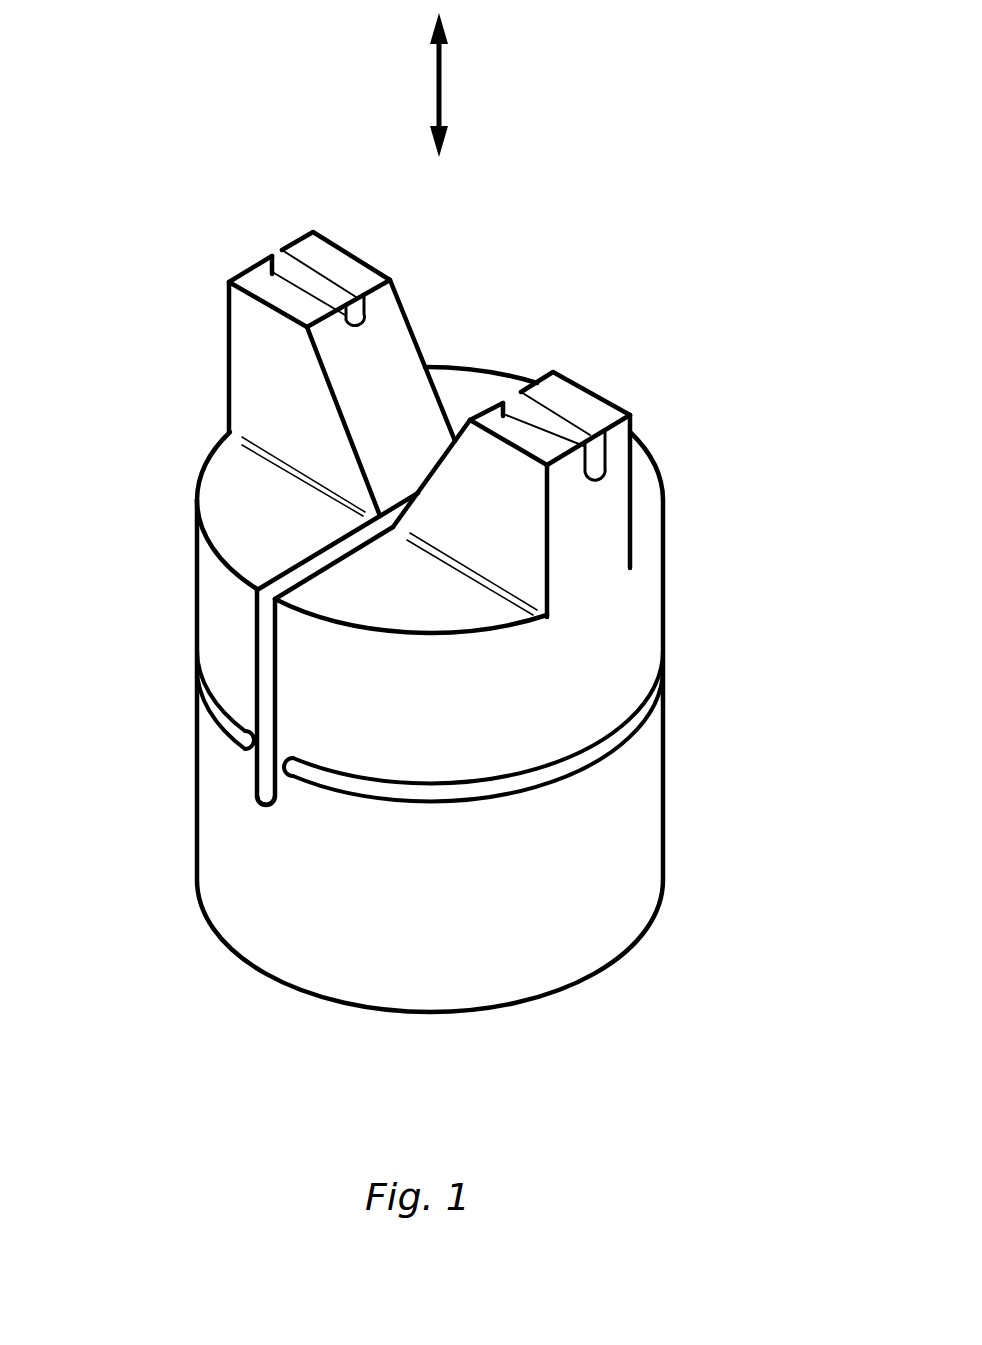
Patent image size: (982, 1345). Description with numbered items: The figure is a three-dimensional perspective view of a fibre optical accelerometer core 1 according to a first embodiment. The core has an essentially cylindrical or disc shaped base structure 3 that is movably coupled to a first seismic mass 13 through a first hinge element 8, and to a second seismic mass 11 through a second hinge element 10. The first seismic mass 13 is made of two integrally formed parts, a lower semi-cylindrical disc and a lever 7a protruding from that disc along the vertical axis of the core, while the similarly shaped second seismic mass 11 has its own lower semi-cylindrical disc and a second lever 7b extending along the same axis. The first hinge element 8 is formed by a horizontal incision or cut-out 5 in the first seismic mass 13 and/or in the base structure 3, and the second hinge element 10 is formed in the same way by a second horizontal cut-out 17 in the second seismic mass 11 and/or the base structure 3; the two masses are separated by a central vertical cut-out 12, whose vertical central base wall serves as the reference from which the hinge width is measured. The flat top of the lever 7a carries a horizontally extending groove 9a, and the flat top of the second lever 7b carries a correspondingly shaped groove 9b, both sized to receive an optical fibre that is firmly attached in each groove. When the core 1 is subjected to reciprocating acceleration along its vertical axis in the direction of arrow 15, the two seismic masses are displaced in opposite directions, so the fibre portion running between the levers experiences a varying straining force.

The fibre optical accelerometer core 1 is at (480, 994).
The base structure 3 is at (724, 790).
The horizontal cut-out 5 is at (523, 725).
The lever 7a is at (582, 494).
The second lever 7b is at (273, 374).
The first hinge element 8 is at (219, 719).
The groove 9a is at (595, 417).
The groove 9b is at (261, 266).
The second hinge element 10 is at (200, 774).
The second seismic mass 11 is at (298, 623).
The central vertical cut-out 12 is at (317, 537).
The first seismic mass 13 is at (743, 566).
The arrow 15 is at (490, 85).
The second horizontal cut-out 17 is at (161, 699).